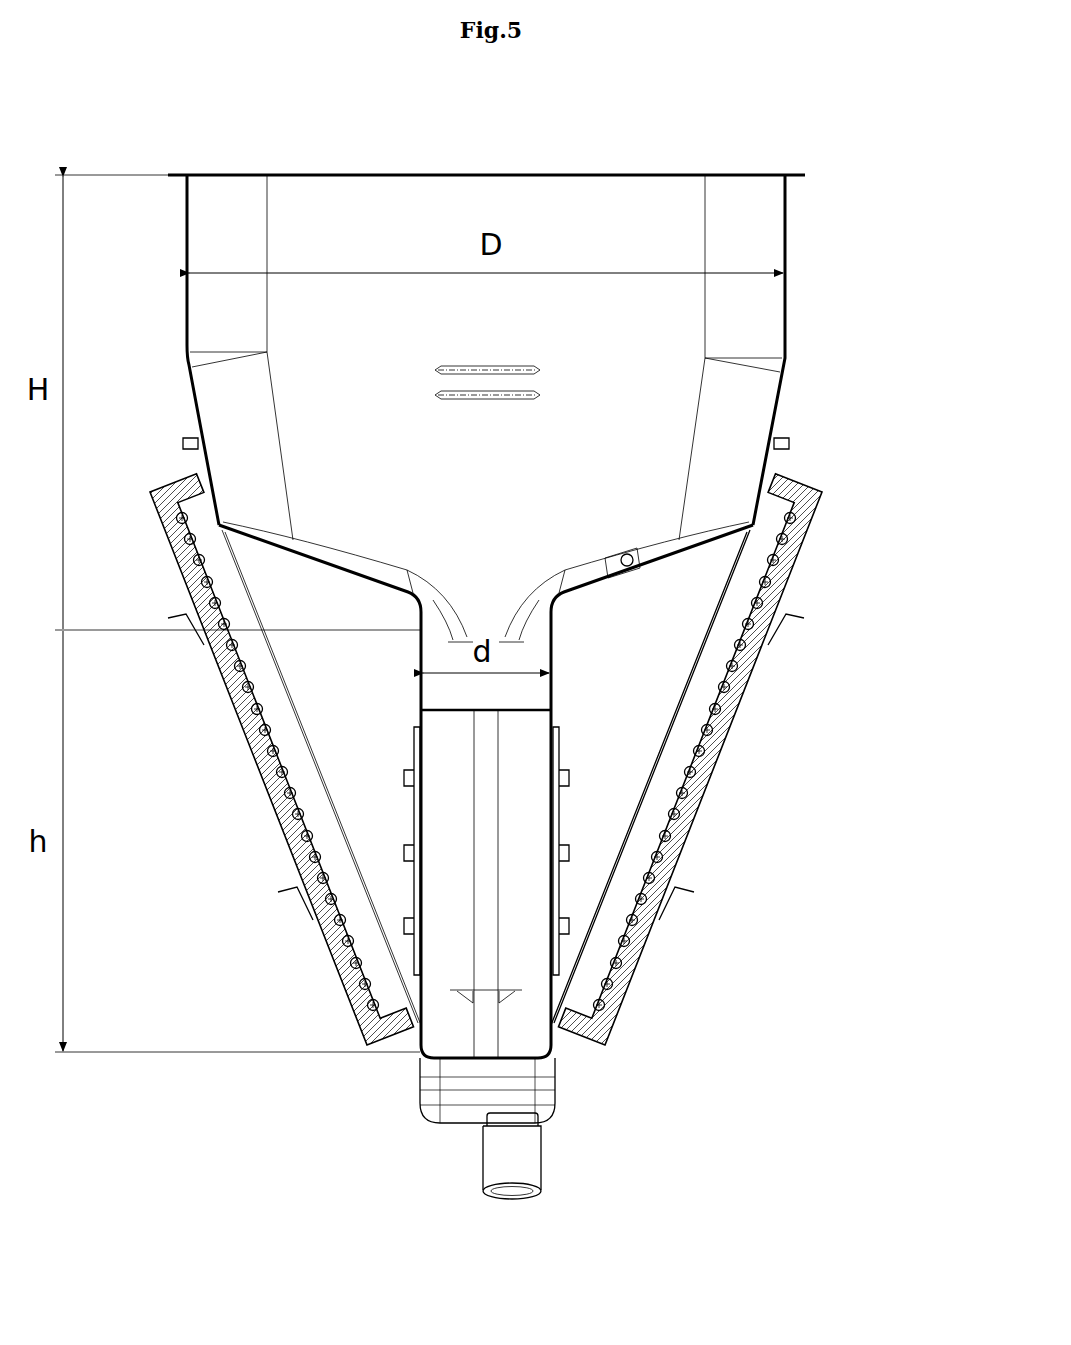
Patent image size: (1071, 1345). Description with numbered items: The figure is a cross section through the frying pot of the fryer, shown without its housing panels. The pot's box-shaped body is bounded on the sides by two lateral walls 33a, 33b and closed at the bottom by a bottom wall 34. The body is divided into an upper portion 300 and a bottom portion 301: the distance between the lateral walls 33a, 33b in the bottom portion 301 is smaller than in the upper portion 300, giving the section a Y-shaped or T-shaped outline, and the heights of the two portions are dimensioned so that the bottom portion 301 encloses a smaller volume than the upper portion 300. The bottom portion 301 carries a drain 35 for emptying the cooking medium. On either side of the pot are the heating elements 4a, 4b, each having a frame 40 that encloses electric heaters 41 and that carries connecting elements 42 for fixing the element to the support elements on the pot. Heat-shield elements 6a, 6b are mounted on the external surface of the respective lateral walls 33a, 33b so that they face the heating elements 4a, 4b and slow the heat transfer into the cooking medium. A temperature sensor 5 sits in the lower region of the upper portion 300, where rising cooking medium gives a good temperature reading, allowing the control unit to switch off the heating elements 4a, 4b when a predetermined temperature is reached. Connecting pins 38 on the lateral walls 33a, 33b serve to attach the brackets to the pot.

The upper portion 300 is at (632, 410).
The lateral wall 33a is at (187, 318).
The lateral wall 33b is at (787, 238).
The connecting pin 38 is at (183, 444).
The temperature sensor 5 is at (620, 555).
The heating element 4a is at (255, 762).
The heating element 4b is at (800, 555).
The frame 40 is at (703, 797).
The electric heater 41 is at (352, 945).
The connecting element 42 is at (290, 890).
The bottom portion 301 is at (515, 860).
The heat-shield element 6a is at (410, 820).
The heat-shield element 6b is at (562, 815).
The bottom wall 34 is at (430, 1058).
The drain 35 is at (518, 1150).